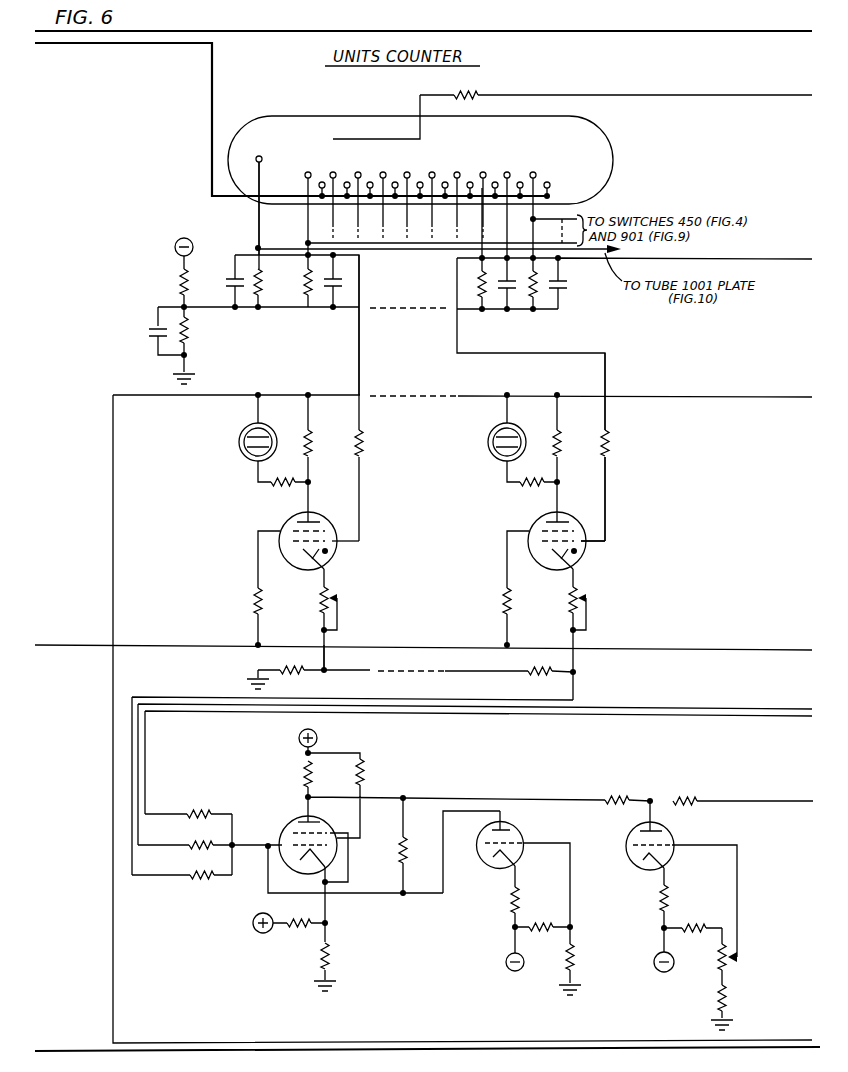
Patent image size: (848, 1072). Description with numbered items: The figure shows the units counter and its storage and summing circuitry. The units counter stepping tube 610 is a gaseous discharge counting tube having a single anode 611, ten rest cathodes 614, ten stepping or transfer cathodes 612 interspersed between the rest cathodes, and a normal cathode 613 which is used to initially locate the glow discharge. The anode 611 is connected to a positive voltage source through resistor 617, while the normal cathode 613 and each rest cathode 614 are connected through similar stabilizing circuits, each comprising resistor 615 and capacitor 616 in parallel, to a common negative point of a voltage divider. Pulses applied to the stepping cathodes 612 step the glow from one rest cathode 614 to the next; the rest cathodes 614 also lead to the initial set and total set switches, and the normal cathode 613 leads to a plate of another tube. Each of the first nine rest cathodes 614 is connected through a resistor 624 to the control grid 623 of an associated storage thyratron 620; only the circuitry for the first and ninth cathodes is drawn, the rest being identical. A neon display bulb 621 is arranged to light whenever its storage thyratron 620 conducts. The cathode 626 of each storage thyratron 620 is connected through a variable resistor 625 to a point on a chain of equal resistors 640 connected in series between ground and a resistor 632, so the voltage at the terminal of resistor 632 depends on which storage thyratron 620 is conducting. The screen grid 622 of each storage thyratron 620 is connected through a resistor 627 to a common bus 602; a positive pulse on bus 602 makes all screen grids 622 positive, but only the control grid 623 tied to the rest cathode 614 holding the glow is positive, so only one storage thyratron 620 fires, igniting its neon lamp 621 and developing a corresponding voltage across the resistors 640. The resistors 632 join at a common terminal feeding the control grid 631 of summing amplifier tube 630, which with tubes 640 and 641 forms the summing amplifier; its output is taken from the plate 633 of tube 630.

The common bus 602 is at (175, 643).
The units counter stepping tube 610 is at (612, 167).
The anode 611 is at (435, 139).
The stepping cathodes 612 is at (395, 181).
The normal cathode 613 is at (268, 143).
The rest cathodes 614 is at (308, 172).
The resistor 615 is at (300, 290).
The capacitor 616 is at (337, 290).
The resistor 617 is at (480, 90).
The storage thyratron 620 is at (317, 512).
The neon display bulb 621 is at (242, 457).
The screen grid 622 is at (287, 527).
The control grid 623 is at (337, 549).
The resistor 624 is at (366, 452).
The variable resistor 625 is at (340, 606).
The cathode 626 is at (312, 565).
The resistor 627 is at (250, 600).
The summing amplifier tube 630 is at (293, 818).
The control grid 631 is at (282, 843).
The resistor 632 is at (186, 820).
The plate 633 is at (314, 820).
The resistors 640 is at (295, 677).
The tube 641 is at (670, 836).